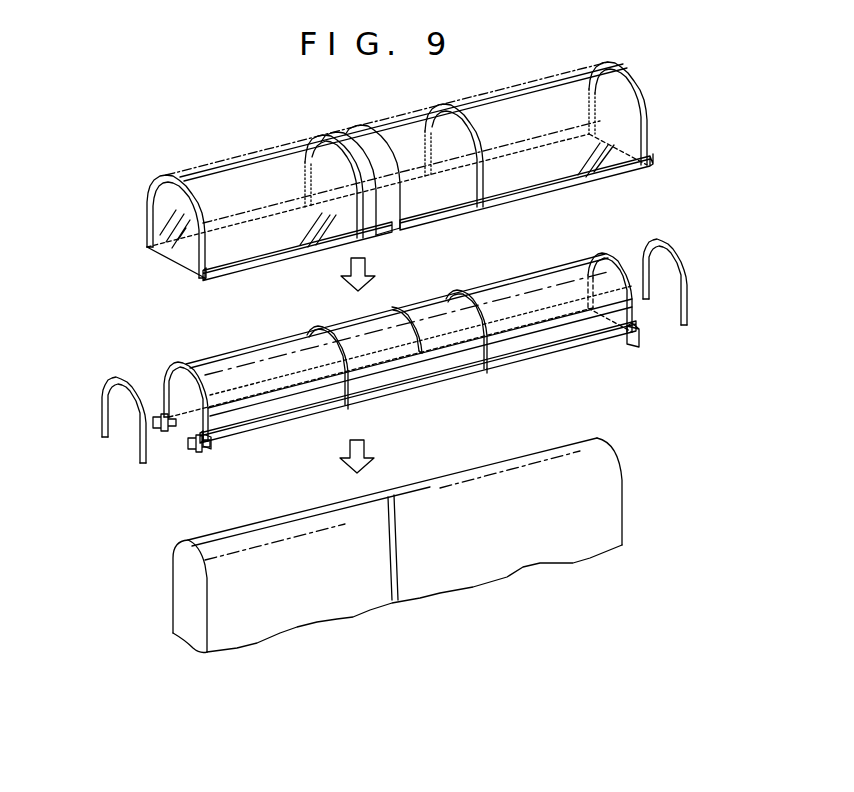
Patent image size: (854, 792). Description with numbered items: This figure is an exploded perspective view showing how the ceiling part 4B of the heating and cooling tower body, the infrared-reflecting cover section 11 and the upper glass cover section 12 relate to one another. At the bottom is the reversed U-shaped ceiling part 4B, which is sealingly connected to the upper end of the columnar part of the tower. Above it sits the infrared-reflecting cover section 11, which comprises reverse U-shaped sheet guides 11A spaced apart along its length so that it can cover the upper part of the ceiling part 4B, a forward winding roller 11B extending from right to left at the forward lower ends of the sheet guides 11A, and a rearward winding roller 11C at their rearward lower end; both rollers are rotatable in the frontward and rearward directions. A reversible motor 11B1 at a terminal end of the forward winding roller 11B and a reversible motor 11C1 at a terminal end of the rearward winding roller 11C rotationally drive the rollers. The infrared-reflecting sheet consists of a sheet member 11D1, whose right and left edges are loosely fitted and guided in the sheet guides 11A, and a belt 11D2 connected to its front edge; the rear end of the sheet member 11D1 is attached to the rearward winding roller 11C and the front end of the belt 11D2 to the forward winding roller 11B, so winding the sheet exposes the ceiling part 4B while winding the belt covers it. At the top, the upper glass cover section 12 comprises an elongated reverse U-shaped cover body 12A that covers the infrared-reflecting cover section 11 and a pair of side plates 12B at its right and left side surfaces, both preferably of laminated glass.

The upper glass cover section 12 is at (530, 106).
The cover body 12A is at (230, 190).
The side plates 12B is at (604, 92).
The infrared-reflecting cover section 11 is at (545, 275).
The sheet guides 11A is at (112, 378).
The forward winding roller 11B is at (281, 418).
The reversible motor 11B1 is at (190, 441).
The rearward winding roller 11C is at (183, 405).
The reversible motor 11C1 is at (152, 428).
The sheet member 11D1 is at (515, 310).
The belt 11D2 is at (629, 342).
The ceiling part 4B is at (590, 492).